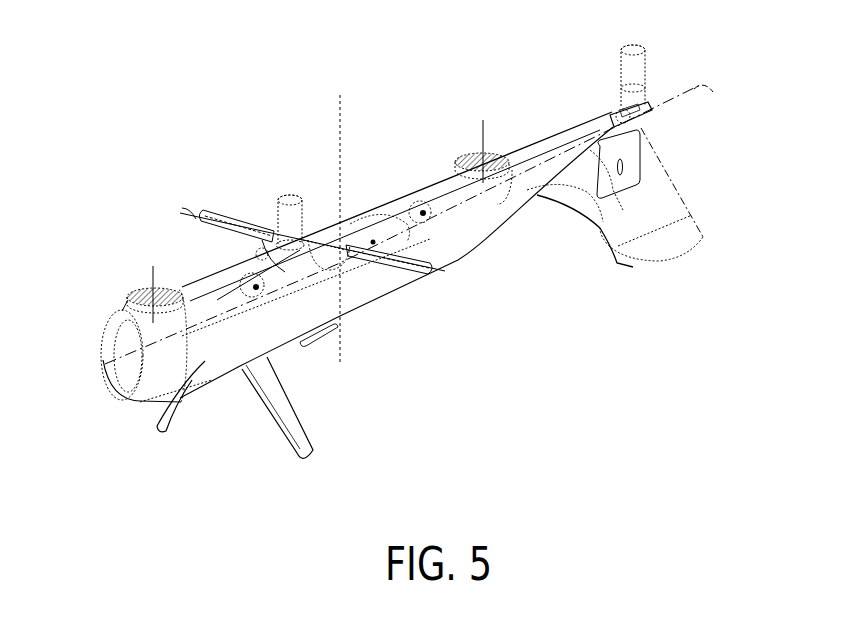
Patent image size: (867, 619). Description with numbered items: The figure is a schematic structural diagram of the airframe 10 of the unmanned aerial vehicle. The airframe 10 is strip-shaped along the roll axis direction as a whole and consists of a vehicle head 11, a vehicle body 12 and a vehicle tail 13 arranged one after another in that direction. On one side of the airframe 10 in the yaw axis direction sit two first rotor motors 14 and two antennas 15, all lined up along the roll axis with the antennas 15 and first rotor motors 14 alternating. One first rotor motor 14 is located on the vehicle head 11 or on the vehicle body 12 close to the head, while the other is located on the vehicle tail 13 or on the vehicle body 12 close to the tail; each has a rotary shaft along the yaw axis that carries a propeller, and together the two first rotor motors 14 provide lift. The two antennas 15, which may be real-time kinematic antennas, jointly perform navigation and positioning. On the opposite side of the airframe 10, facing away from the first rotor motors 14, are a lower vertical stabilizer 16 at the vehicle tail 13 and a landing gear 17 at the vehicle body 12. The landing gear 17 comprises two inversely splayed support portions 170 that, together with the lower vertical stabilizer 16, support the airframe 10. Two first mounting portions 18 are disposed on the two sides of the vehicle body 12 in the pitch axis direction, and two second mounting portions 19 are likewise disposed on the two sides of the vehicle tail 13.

The airframe 10 is at (735, 41).
The vehicle head 11 is at (110, 348).
The vehicle body 12 is at (388, 301).
The vehicle tail 13 is at (595, 124).
The first rotor motor 14 is at (156, 286).
The antenna 15 is at (286, 198).
The lower vertical stabilizer 16 is at (695, 238).
The landing gear 17 is at (223, 441).
The support portion 170 is at (295, 472).
The first mounting portion 18 is at (266, 238).
The second mounting portion 19 is at (605, 99).